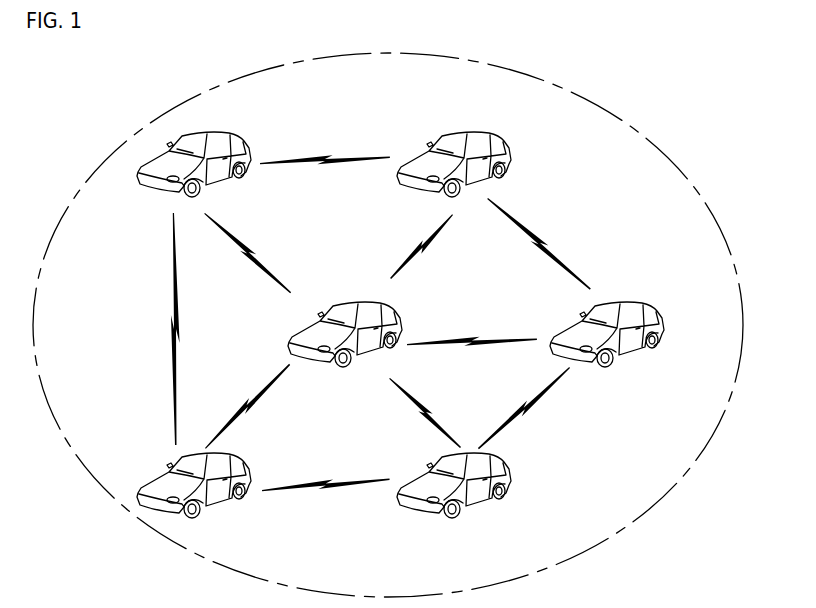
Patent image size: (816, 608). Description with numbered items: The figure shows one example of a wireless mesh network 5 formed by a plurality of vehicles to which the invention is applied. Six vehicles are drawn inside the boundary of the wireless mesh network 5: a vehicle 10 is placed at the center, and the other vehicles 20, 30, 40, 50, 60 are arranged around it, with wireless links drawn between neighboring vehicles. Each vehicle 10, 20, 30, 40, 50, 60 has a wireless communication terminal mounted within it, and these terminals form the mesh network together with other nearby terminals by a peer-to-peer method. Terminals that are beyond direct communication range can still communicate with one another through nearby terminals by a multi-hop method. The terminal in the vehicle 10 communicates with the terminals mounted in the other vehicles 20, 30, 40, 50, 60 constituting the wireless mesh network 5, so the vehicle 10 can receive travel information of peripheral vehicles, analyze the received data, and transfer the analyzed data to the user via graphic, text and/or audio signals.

The wireless mesh network 5 is at (637, 130).
The vehicle 10 is at (400, 320).
The vehicle 20 is at (223, 135).
The vehicle 30 is at (488, 133).
The vehicle 40 is at (662, 320).
The vehicle 50 is at (510, 473).
The vehicle 60 is at (243, 459).